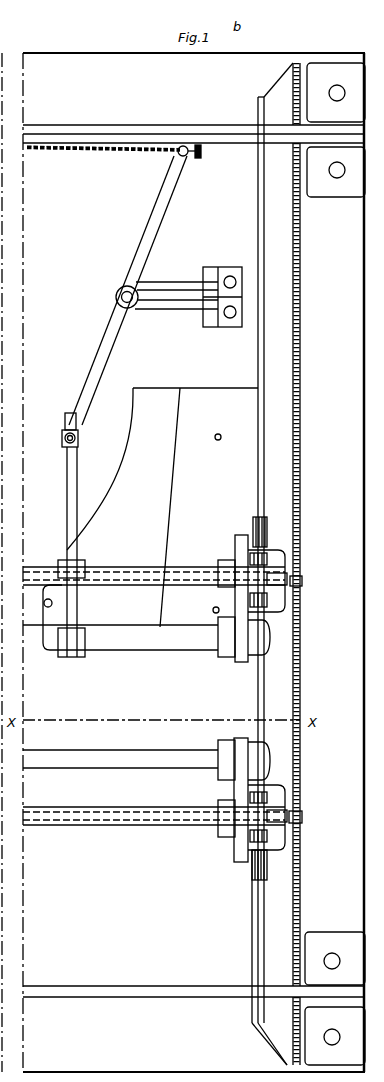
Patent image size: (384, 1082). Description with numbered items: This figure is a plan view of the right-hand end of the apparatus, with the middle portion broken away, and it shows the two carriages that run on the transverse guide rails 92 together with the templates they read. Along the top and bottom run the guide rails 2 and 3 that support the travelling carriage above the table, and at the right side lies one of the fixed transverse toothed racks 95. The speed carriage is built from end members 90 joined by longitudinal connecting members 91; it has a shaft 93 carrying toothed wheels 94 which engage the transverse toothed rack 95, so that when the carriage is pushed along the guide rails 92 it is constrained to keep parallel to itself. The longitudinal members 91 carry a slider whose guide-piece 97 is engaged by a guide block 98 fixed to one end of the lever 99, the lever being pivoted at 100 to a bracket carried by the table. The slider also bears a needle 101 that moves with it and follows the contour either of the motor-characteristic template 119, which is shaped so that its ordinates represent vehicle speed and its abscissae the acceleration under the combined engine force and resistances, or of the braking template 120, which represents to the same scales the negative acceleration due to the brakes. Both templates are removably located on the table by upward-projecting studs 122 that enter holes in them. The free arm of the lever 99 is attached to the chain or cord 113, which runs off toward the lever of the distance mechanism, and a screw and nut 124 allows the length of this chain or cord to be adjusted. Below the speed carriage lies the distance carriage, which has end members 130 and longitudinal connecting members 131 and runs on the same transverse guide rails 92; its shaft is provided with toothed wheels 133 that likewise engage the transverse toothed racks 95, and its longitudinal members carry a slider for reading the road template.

The guide rail 2 is at (118, 135).
The chain or cord 113 is at (148, 150).
The screw and nut 124 is at (198, 152).
The lever 99 is at (115, 327).
The pivot 100 is at (134, 304).
The transverse guide rail 92 is at (258, 335).
The guide block 98 is at (79, 440).
The guide-piece 97 is at (77, 497).
The motor-characteristic template 119 is at (162, 469).
The braking template 120 is at (190, 507).
The stud 122 is at (222, 428).
The shaft 93 is at (120, 566).
The longitudinal connecting member 91 is at (185, 566).
The end member 90 is at (264, 528).
The transverse toothed rack 95 is at (300, 452).
The toothed wheel 94 is at (299, 574).
The needle 101 is at (53, 603).
The longitudinal connecting member 131 is at (104, 760).
The end member 130 is at (240, 758).
The toothed wheel 133 is at (299, 812).
The guide rail 3 is at (190, 988).